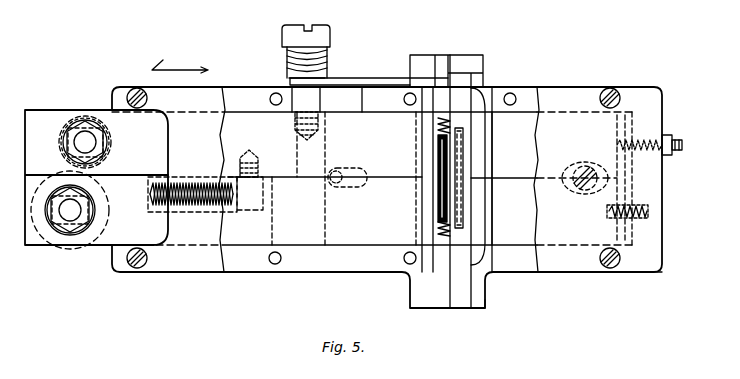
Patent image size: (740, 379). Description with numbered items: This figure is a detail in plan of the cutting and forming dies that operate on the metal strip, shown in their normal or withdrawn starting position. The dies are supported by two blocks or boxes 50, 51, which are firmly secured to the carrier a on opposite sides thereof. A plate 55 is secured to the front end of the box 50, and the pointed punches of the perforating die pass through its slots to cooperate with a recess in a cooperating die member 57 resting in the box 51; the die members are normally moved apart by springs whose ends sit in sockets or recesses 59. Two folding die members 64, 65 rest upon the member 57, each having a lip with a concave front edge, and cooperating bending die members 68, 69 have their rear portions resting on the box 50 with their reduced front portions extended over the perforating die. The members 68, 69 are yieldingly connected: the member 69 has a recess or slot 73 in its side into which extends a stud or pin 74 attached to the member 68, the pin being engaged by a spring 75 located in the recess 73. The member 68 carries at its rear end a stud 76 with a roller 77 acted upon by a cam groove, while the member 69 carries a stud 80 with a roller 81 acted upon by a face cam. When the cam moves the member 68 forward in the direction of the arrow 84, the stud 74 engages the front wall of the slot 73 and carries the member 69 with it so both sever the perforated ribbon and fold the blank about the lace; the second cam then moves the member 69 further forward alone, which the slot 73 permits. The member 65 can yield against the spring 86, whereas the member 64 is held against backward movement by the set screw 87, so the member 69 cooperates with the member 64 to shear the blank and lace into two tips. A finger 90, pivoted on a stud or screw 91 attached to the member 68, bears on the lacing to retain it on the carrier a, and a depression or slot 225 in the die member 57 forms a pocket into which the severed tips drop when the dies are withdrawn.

The die block or box 50 is at (228, 273).
The die block or box 51 is at (597, 272).
The plate 55 is at (439, 210).
The coöperating die member 57 is at (465, 238).
The sockets or recesses 59 is at (440, 120).
The folding die member 64 is at (517, 118).
The folding die member 65 is at (532, 240).
The bending die member 68 is at (237, 120).
The bending die member 69 is at (258, 236).
The recess or slot 73 is at (222, 207).
The stud or pin 74 is at (255, 192).
The spring 75 is at (172, 183).
The stud 76 is at (76, 143).
The roller 77 is at (107, 152).
The stud 80 is at (75, 212).
The roller 81 is at (83, 248).
The arrow 84 is at (180, 59).
The spring 86 is at (628, 218).
The set screw 87 is at (680, 141).
The finger 90 is at (347, 79).
The stud or screw 91 is at (330, 42).
The depression or slot 225 is at (463, 160).
The carrier a is at (483, 307).